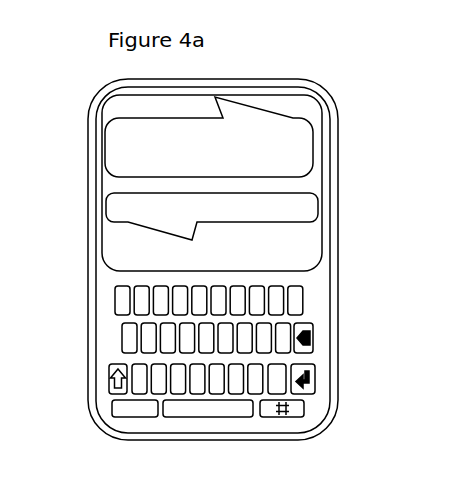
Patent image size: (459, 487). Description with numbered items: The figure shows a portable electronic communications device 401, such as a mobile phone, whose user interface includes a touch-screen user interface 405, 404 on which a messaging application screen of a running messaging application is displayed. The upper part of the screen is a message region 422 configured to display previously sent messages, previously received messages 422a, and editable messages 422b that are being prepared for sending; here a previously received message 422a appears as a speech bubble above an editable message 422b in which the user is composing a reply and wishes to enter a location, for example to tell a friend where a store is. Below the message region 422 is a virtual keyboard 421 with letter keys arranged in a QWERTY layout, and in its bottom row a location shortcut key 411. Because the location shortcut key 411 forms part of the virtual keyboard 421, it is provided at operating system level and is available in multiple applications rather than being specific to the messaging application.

The portable electronic communications device 401 is at (260, 249).
The touch-screen user interface 404 is at (264, 260).
The touch-screen user interface 405 is at (290, 243).
The location shortcut key 411 is at (297, 408).
The virtual keyboard 421 is at (260, 372).
The message region 422 is at (135, 253).
The previously received message 422a is at (125, 147).
The editable message 422b is at (133, 203).